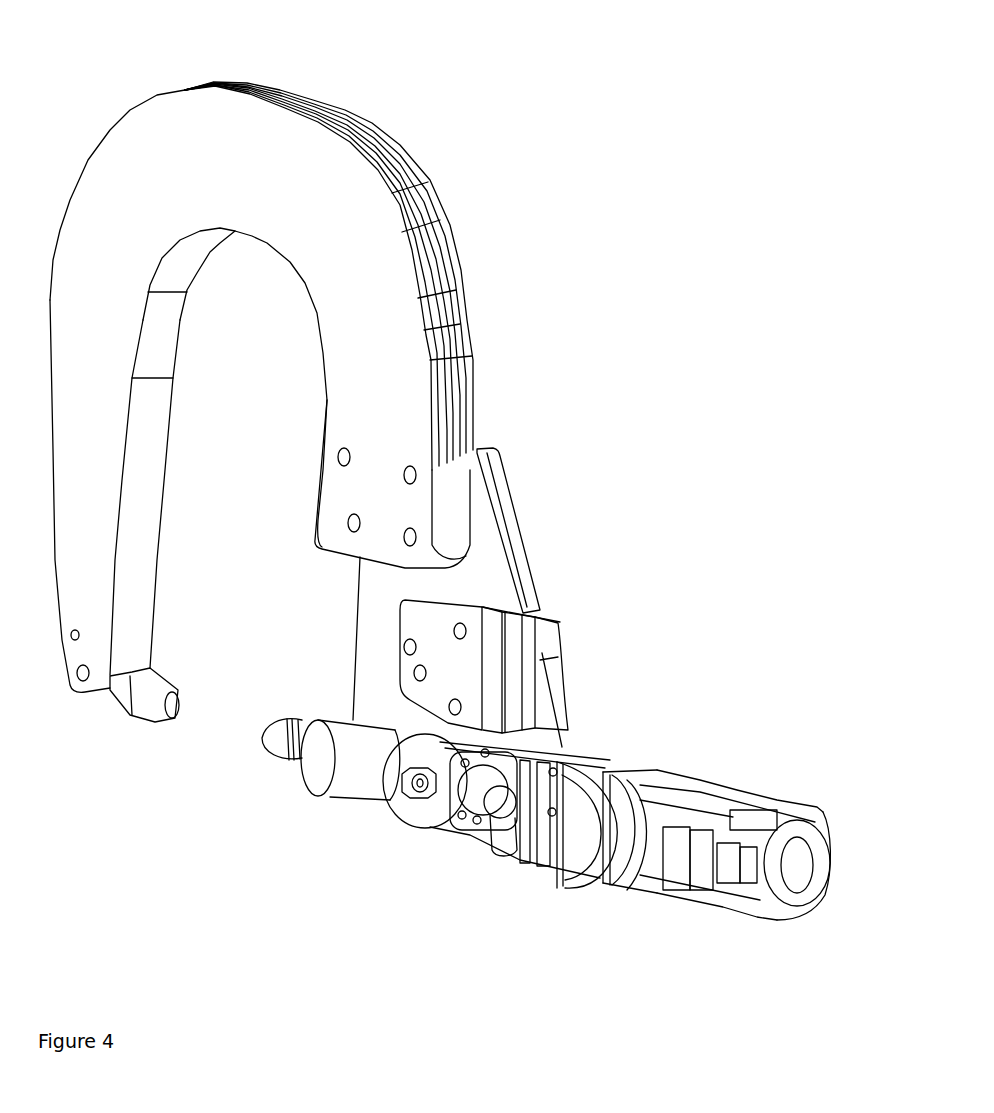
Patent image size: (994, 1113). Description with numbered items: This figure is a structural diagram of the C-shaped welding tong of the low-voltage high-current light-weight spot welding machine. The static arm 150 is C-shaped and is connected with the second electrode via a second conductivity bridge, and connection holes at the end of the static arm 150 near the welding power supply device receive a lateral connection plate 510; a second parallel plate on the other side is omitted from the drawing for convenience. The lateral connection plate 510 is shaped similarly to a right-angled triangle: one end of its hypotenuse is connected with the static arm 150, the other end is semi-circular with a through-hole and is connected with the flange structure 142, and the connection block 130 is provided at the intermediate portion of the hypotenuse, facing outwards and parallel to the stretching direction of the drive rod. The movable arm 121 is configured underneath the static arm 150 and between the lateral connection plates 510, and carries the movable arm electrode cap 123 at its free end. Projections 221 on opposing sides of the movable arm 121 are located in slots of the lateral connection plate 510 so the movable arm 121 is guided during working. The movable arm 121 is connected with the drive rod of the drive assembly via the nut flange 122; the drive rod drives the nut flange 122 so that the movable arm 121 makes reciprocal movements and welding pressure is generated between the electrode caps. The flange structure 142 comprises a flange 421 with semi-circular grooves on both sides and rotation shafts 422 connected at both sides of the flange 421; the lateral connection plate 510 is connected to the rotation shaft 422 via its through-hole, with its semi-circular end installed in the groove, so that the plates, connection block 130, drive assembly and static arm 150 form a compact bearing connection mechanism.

The static arm 150 is at (130, 118).
The lateral connection plate 510 is at (487, 503).
The connection block 130 is at (478, 630).
The movable arm electrode cap 123 is at (270, 748).
The movable arm 121 is at (322, 748).
The projection 221 is at (410, 788).
The nut flange 122 is at (437, 813).
The rotation shaft 422 is at (527, 870).
The flange 421 is at (593, 867).
The flange structure 142 is at (540, 946).